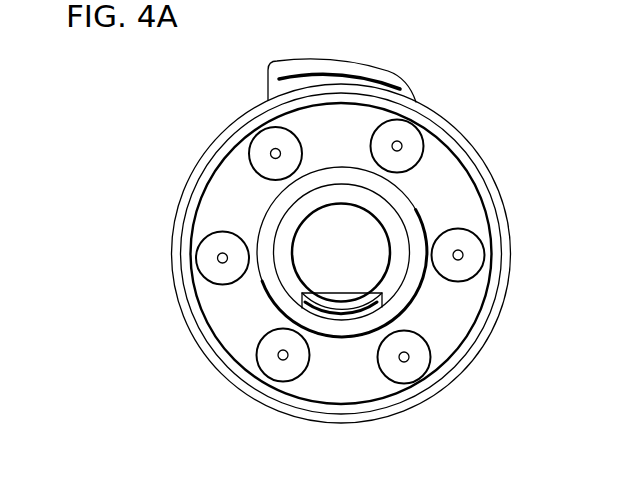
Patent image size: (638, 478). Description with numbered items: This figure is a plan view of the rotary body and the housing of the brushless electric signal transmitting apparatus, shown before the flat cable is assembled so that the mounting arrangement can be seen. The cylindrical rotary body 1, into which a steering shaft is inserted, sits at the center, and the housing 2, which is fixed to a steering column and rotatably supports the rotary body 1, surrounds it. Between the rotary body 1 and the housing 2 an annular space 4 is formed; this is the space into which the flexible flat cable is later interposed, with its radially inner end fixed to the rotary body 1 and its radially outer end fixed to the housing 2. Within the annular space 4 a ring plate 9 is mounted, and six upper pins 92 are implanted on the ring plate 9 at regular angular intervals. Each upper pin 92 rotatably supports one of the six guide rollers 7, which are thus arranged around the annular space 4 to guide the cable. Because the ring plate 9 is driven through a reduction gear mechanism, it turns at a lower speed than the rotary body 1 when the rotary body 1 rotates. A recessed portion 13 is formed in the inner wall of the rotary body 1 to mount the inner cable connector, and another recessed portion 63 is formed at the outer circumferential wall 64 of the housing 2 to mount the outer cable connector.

The rotary body 1 is at (394, 219).
The housing 2 is at (229, 127).
The annular space 4 is at (468, 205).
The guide roller 7 is at (388, 367).
The ring plate 9 is at (468, 317).
The recessed portion 13 is at (353, 310).
The recessed portion 63 is at (290, 78).
The outer circumferential wall 64 is at (314, 63).
The upper pin 92 is at (408, 360).